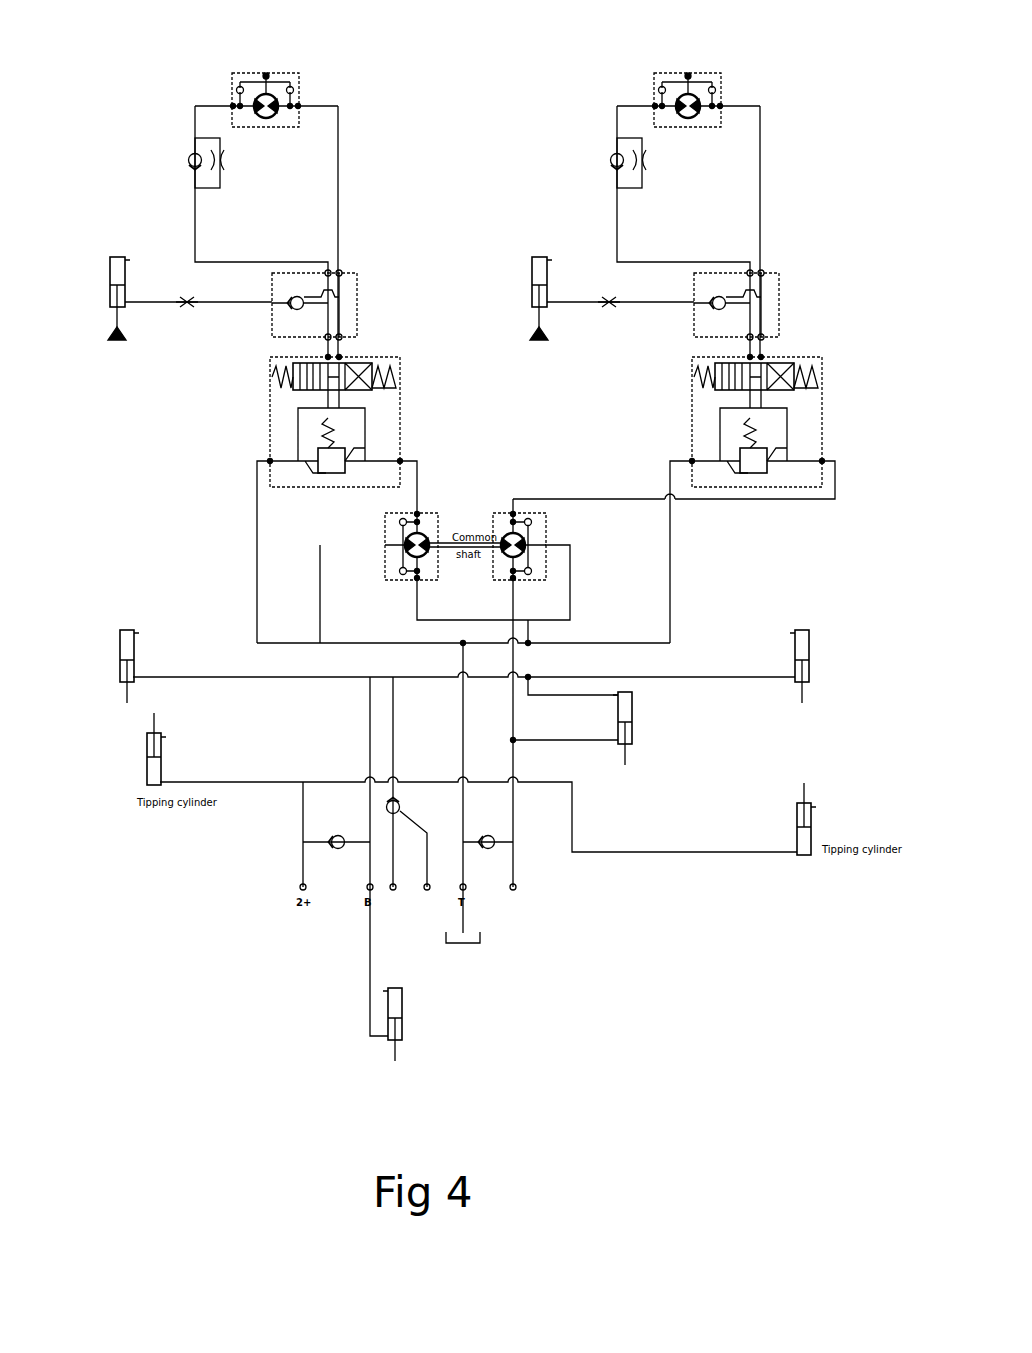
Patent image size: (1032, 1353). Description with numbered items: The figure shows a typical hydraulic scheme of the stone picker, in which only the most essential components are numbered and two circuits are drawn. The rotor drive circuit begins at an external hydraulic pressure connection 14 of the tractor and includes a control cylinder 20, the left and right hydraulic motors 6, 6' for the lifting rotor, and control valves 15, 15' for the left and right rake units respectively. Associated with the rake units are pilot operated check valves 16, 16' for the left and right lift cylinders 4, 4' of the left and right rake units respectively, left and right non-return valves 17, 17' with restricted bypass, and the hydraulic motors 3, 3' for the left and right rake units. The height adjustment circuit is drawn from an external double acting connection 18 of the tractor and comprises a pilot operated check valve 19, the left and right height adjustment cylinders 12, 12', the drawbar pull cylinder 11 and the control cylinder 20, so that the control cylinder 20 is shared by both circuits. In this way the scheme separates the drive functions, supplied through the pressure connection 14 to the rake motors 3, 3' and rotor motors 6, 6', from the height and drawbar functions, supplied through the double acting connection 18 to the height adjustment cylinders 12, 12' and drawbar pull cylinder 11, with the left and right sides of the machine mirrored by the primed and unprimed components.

The hydraulic motor 3 is at (226, 82).
The hydraulic motor 3' is at (648, 79).
The non-return valve with restricted bypass 17 is at (185, 163).
The non-return valve with restricted bypass 17' is at (611, 163).
The lift cylinder 4 is at (155, 321).
The lift cylinder 4' is at (580, 321).
The pilot operated check valve 16 is at (338, 303).
The pilot operated check valve 16' is at (775, 300).
The control valve 15 is at (308, 421).
The control valve 15' is at (799, 421).
The hydraulic motor 6 is at (407, 541).
The hydraulic motor 6' is at (555, 546).
The height adjustment cylinder 12 is at (114, 658).
The height adjustment cylinder 12' is at (813, 659).
The control cylinder 20 is at (645, 718).
The pilot operated check valve 19 is at (402, 810).
The external double acting connection 18 is at (410, 904).
The external hydraulic pressure connection 14 is at (511, 906).
The drawbar pull cylinder 11 is at (383, 1047).